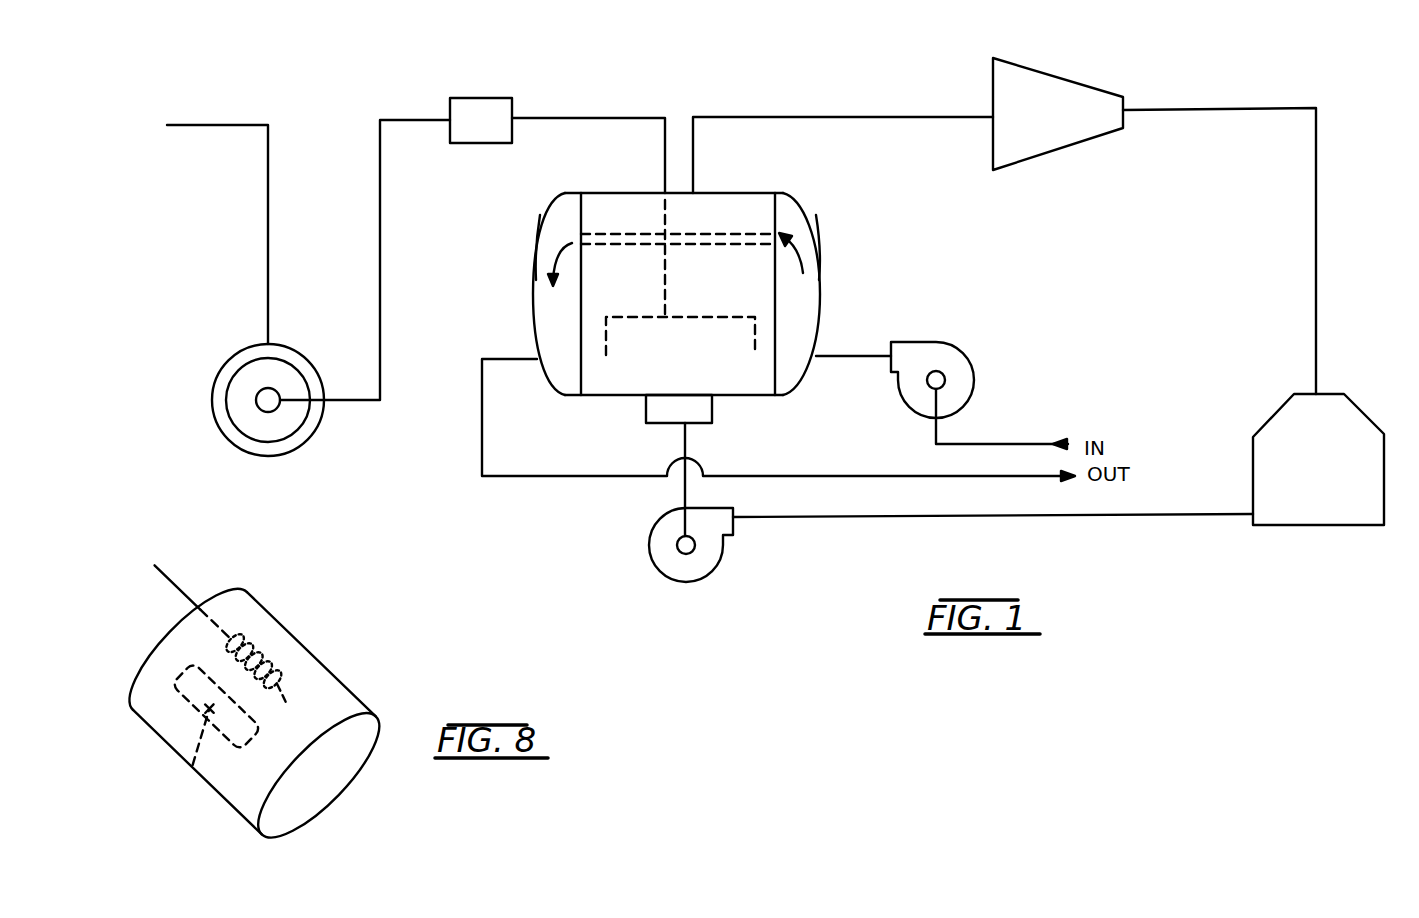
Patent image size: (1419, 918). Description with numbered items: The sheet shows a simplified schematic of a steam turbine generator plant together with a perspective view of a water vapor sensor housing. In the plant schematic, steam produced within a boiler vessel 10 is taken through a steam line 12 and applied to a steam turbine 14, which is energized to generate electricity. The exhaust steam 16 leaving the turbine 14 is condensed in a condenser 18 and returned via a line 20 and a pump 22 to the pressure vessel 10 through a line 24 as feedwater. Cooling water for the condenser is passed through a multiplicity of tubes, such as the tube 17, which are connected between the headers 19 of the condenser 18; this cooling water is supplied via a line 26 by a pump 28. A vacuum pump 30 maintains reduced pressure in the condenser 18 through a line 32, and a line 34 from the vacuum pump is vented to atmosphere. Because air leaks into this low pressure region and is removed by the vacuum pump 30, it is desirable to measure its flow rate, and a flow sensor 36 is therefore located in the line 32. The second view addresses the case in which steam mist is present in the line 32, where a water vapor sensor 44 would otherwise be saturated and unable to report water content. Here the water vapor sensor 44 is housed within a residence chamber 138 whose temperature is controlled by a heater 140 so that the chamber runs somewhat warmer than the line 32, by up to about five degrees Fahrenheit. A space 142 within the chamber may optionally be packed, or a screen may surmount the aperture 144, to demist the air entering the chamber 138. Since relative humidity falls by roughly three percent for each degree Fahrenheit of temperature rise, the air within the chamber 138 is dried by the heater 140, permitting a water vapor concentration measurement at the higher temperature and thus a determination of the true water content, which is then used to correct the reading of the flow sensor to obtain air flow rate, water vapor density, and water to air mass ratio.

In FIG. 1, the boiler vessel 10 is at (1362, 414).
In FIG. 1, the steam line 12 is at (1316, 246).
In FIG. 1, the steam turbine 14 is at (1088, 91).
In FIG. 1, the exhaust steam 16 is at (855, 116).
In FIG. 1, the tube 17 is at (727, 234).
In FIG. 1, the condenser 18 is at (814, 237).
In FIG. 1, the headers 19 is at (550, 218).
In FIG. 1, the line 20 is at (685, 487).
In FIG. 1, the pump 22 is at (668, 578).
In FIG. 1, the line 24 is at (1042, 516).
In FIG. 1, the line 26 is at (850, 356).
In FIG. 1, the pump 28 is at (972, 367).
In FIG. 1, the vacuum pump 30 is at (250, 453).
In FIG. 1, the line 32 is at (593, 118).
In FIG. 1, the line 34 is at (268, 190).
In FIG. 1, the flow sensor 36 is at (492, 98).
In FIG. 8, the water vapor sensor 44 is at (178, 773).
In FIG. 8, the residence chamber 138 is at (320, 662).
In FIG. 8, the heater 140 is at (172, 586).
In FIG. 8, the space 142 is at (330, 718).
In FIG. 8, the aperture 144 is at (348, 788).